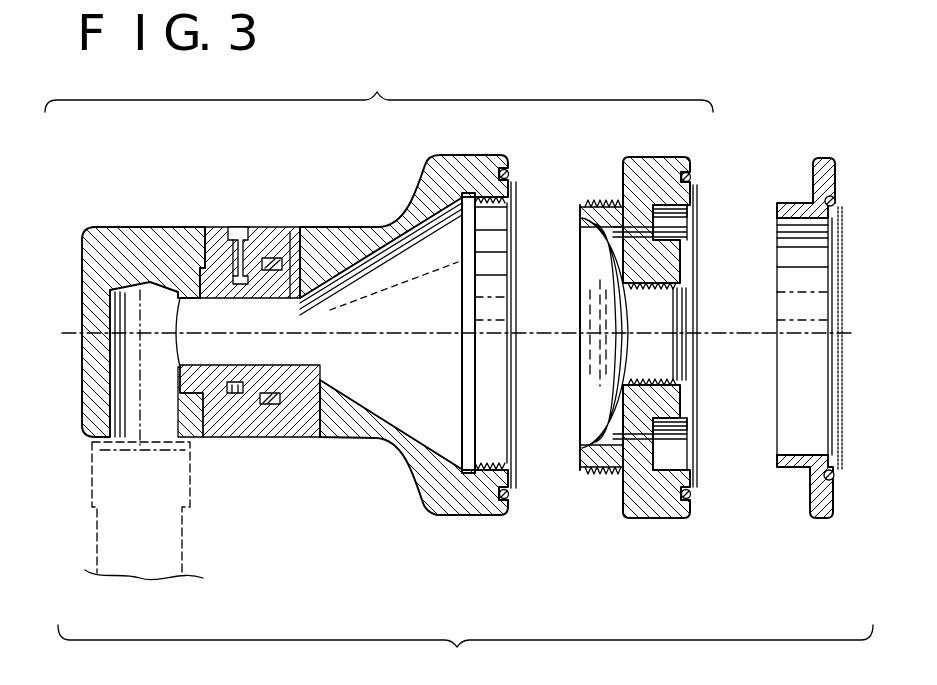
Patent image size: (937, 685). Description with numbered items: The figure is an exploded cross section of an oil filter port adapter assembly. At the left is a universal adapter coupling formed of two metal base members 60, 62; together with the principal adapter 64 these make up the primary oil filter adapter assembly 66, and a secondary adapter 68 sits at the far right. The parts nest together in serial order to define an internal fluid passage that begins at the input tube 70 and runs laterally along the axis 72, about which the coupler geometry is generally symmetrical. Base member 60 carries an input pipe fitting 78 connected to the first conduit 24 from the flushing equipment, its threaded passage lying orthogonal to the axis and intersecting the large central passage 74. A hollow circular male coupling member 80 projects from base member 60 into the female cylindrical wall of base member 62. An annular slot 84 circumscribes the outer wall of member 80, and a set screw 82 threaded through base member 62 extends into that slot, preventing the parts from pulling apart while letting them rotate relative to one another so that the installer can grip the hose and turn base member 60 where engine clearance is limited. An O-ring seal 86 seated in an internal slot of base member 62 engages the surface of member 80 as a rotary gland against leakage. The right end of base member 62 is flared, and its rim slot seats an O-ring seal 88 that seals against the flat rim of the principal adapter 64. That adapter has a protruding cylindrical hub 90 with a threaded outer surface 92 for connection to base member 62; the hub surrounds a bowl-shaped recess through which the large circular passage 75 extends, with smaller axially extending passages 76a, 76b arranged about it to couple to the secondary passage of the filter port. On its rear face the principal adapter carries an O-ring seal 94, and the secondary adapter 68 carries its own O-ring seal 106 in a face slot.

The first conduit 24 is at (97, 527).
The base member 60 is at (177, 226).
The base member 62 is at (390, 230).
The principal adapter 64 is at (657, 520).
The primary oil filter adapter assembly 66 is at (379, 86).
The secondary adapter 68 is at (835, 503).
The input tube 70 is at (132, 417).
The axis 72 is at (428, 332).
The central passage 74 is at (408, 363).
The circular axially extending passage 75 is at (637, 314).
The axially extending passage 76a is at (643, 248).
The axially extending passage 76b is at (643, 441).
The input pipe fitting 78 is at (180, 408).
The male coupling member 80 is at (206, 269).
The set screw 82 is at (231, 226).
The annular slot 84 is at (248, 407).
The O-ring seal 86 is at (274, 262).
The O-ring seal 88 is at (516, 174).
The cylindrical portion 90 is at (578, 458).
The threaded outer surface 92 is at (580, 474).
The O-ring seal 94 is at (700, 493).
The O-ring seal 106 is at (842, 198).